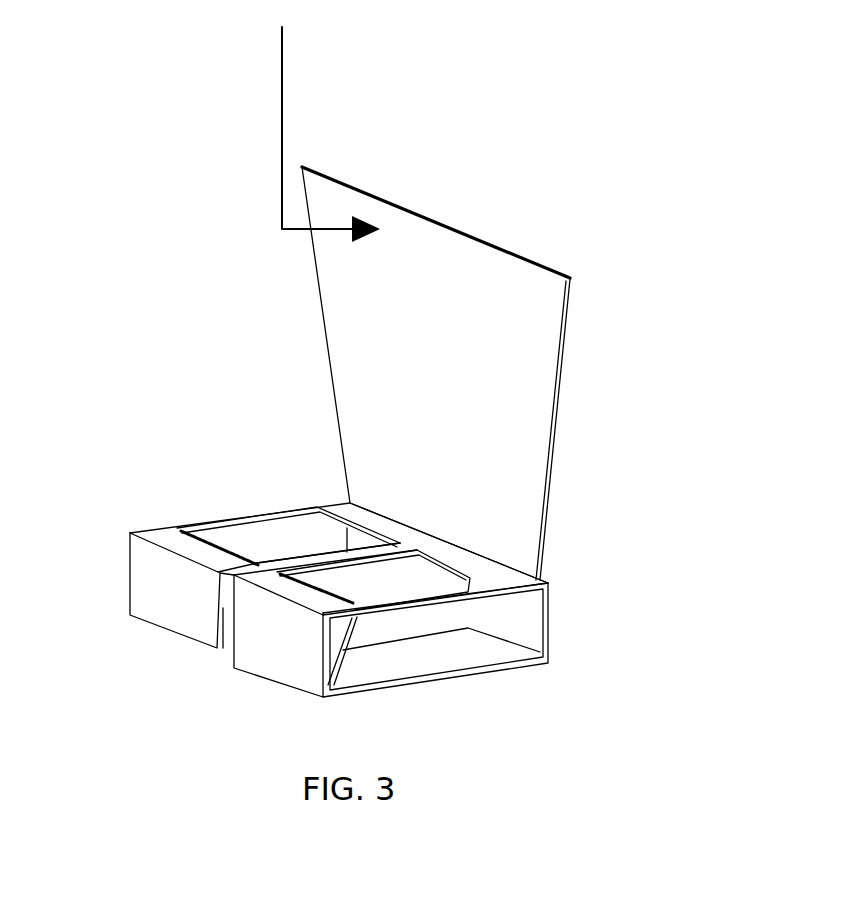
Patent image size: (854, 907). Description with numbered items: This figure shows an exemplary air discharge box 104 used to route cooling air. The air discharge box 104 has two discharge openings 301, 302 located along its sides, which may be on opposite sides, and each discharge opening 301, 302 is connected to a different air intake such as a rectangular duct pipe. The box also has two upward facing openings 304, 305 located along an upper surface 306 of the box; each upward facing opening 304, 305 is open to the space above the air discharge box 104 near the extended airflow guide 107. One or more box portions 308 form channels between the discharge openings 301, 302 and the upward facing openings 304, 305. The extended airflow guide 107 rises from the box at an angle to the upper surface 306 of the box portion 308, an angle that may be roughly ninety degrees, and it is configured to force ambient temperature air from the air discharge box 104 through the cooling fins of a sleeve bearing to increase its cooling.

The air discharge box 104 is at (573, 224).
The extended airflow guide 107 is at (308, 125).
The discharge opening 301 is at (435, 648).
The discharge opening 302 is at (202, 503).
The upward facing opening 304 is at (310, 532).
The upward facing opening 305 is at (435, 578).
The upper surface 306 is at (515, 578).
The box portion 308 is at (173, 562).